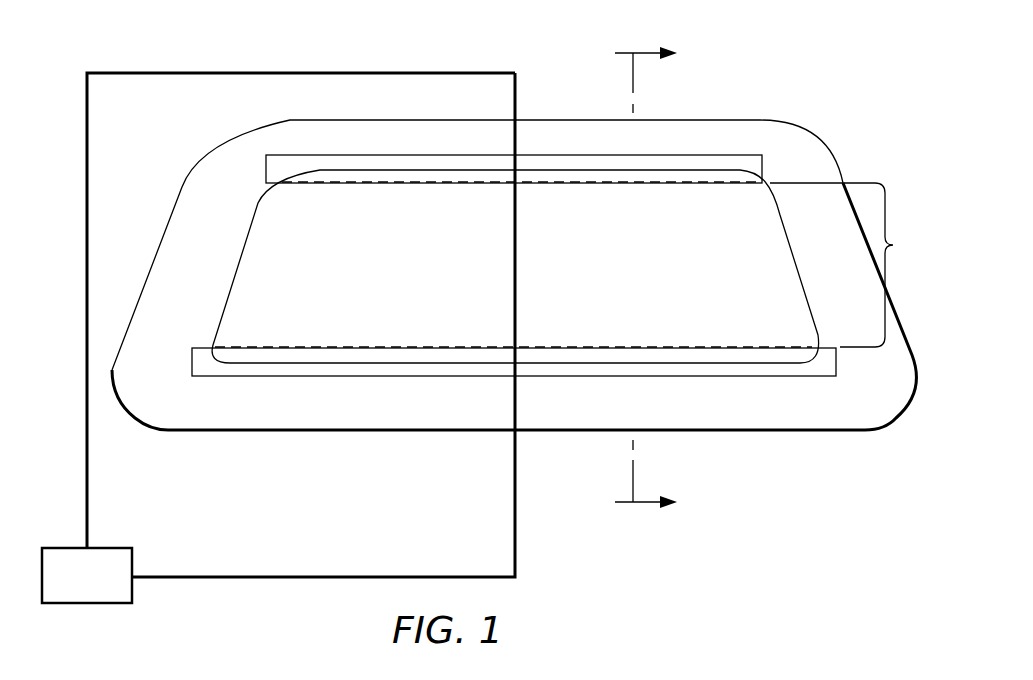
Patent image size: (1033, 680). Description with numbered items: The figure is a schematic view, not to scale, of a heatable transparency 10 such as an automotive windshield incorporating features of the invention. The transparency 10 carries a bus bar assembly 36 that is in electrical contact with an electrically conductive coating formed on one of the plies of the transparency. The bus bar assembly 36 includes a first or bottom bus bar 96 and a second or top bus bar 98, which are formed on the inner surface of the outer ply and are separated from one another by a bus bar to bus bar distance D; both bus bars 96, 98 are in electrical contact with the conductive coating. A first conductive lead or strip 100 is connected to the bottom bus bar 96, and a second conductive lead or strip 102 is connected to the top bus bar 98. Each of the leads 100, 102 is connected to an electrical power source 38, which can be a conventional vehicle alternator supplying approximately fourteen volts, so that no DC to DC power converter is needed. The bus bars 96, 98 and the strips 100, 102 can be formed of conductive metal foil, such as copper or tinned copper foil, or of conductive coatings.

The heatable transparency 10 is at (516, 275).
The bus bar assembly 36 is at (541, 110).
The electrical power source 38 is at (101, 591).
The first or bottom bus bar 96 is at (827, 363).
The second or top bus bar 98 is at (750, 163).
The first conductive lead or strip 100 is at (517, 552).
The second conductive lead or strip 102 is at (262, 72).